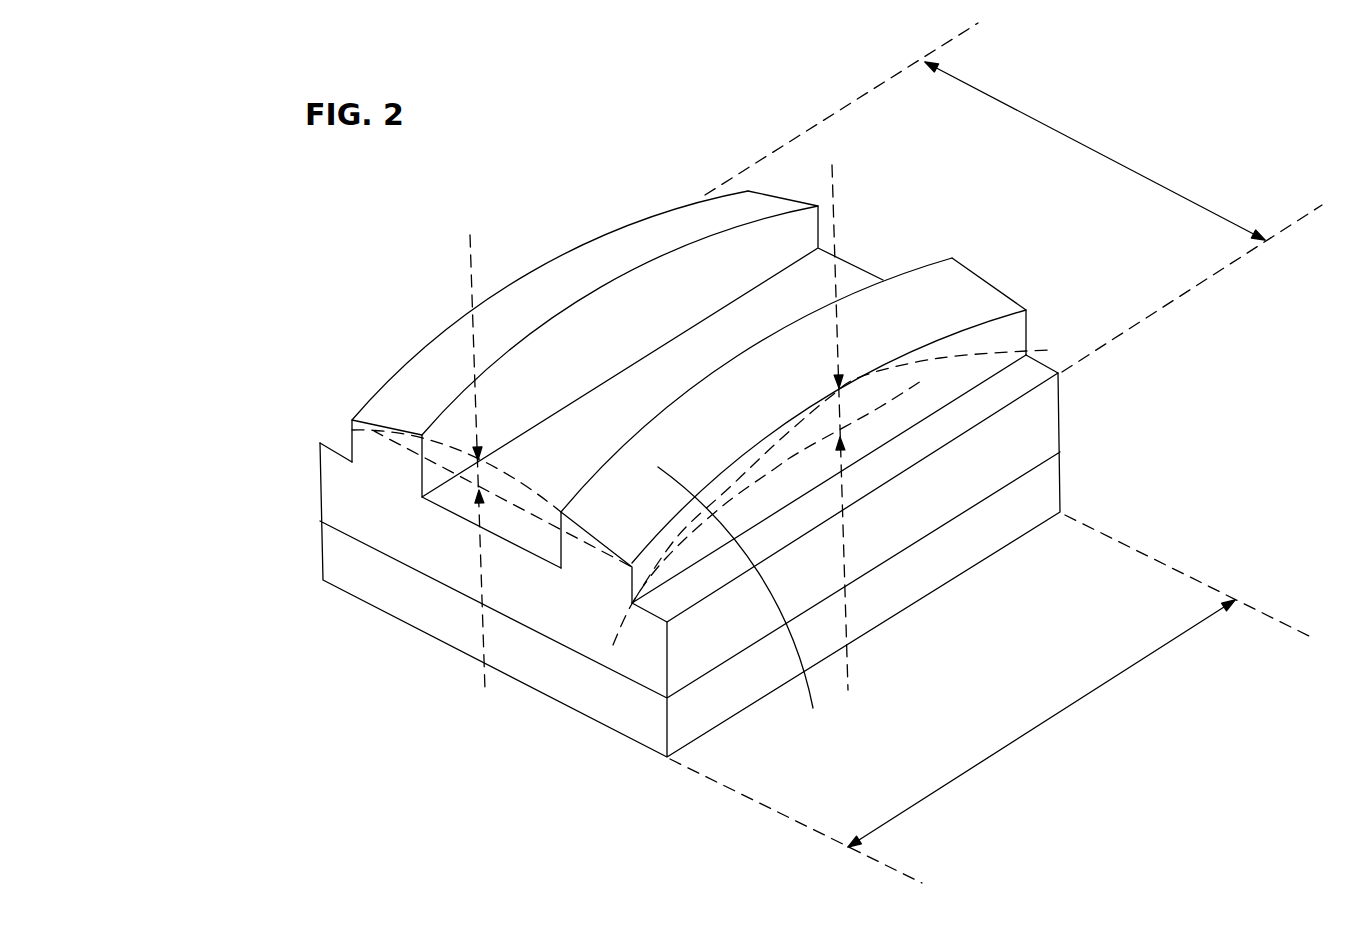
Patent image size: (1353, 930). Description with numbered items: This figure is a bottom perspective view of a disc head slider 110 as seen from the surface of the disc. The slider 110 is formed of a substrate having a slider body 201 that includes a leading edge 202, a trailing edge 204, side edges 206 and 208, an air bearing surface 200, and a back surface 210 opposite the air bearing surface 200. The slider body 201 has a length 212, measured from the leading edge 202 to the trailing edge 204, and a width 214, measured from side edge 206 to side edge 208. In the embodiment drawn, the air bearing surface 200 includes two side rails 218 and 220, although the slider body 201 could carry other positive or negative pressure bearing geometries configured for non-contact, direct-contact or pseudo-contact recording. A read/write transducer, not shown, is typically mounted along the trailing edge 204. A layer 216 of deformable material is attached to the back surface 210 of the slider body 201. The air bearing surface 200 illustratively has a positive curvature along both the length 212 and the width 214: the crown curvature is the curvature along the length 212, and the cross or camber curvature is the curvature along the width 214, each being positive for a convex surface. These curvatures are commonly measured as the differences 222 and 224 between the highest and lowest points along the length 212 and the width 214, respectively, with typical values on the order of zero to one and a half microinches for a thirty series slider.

The disc head slider 110 is at (352, 325).
The air bearing surface 200 is at (692, 208).
The slider body 201 is at (573, 620).
The leading edge 202 is at (840, 260).
The trailing edge 204 is at (398, 533).
The side edge 206 is at (690, 652).
The side edge 208 is at (350, 430).
The back surface 210 is at (605, 667).
The length 212 is at (998, 750).
The width 214 is at (1042, 125).
The layer of deformable material 216 is at (1050, 492).
The side rail 218 is at (548, 262).
The side rail 220 is at (750, 605).
The difference 222 is at (848, 655).
The difference 224 is at (480, 660).